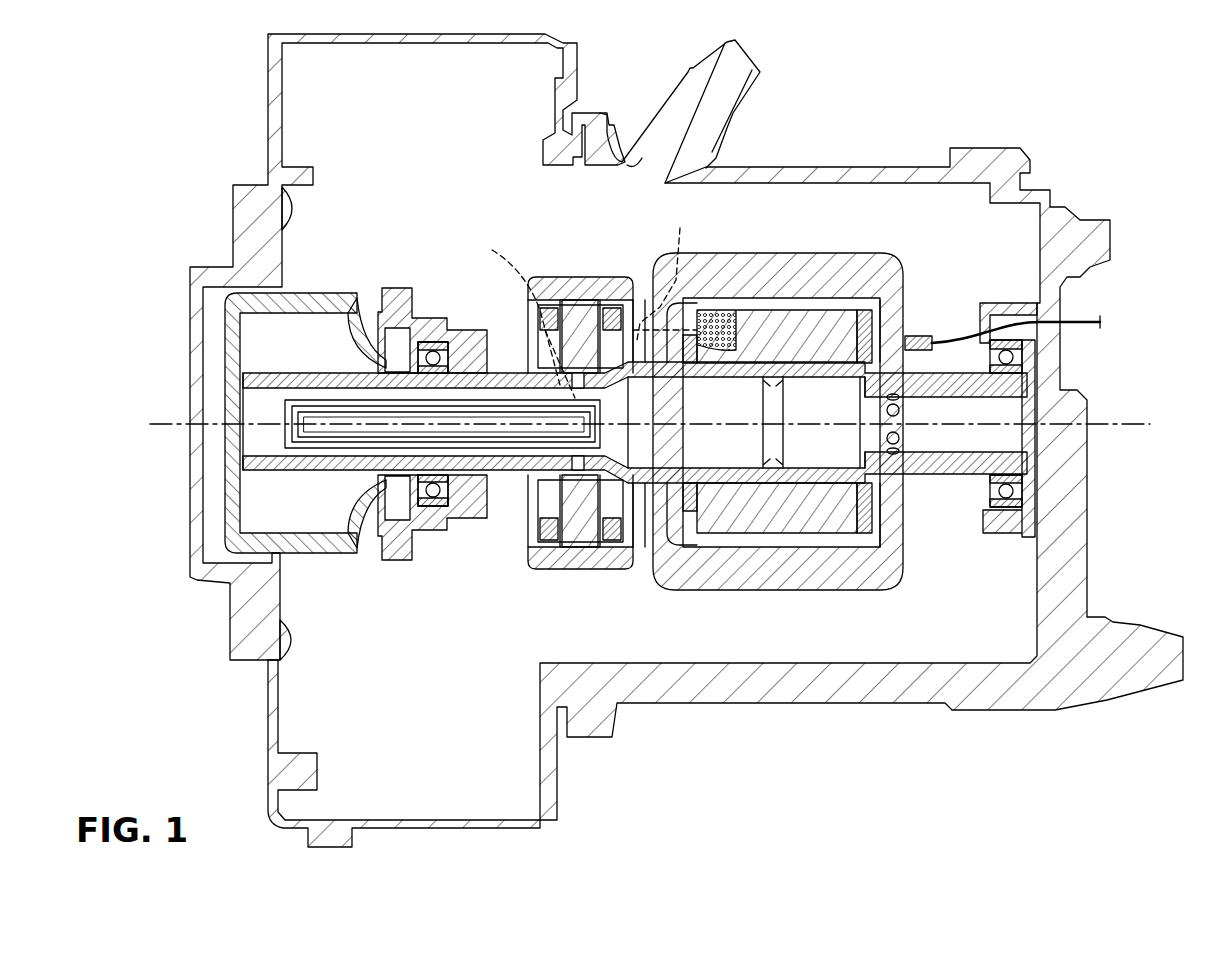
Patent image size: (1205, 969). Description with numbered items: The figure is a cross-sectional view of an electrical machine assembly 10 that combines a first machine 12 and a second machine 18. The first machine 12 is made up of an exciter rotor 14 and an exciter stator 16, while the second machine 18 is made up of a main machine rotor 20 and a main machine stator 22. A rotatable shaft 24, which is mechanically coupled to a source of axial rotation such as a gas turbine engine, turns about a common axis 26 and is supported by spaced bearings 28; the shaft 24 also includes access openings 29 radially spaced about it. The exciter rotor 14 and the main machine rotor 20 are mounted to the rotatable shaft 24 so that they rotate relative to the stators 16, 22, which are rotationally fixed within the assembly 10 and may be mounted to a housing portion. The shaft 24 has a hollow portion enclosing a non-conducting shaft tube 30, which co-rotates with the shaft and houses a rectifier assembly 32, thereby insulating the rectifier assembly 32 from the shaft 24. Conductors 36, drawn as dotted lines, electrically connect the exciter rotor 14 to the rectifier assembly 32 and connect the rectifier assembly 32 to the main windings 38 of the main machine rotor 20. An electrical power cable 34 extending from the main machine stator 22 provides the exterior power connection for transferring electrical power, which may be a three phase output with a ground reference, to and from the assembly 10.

The electrical machine assembly 10 is at (881, 84).
The first machine 12 is at (641, 318).
The exciter rotor 14 is at (566, 306).
The exciter stator 16 is at (573, 292).
The second machine 18 is at (908, 497).
The main machine rotor 20 is at (808, 330).
The main machine stator 22 is at (828, 580).
The rotatable shaft 24 is at (274, 453).
The common axis 26 is at (666, 424).
The spaced bearings 28 is at (432, 488).
The access openings 29 is at (560, 385).
The shaft tube 30 is at (285, 405).
The rectifier assembly 32 is at (286, 444).
The electrical power cable 34 is at (918, 338).
The conductors 36 is at (580, 300).
The main windings 38 is at (712, 315).